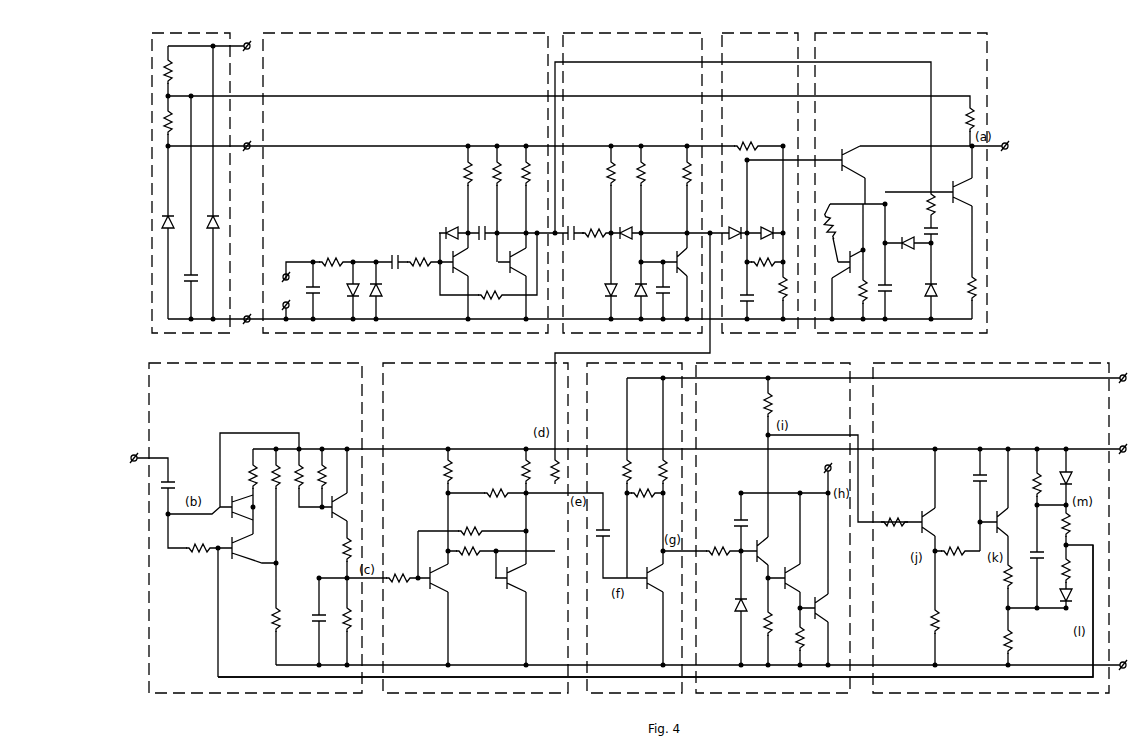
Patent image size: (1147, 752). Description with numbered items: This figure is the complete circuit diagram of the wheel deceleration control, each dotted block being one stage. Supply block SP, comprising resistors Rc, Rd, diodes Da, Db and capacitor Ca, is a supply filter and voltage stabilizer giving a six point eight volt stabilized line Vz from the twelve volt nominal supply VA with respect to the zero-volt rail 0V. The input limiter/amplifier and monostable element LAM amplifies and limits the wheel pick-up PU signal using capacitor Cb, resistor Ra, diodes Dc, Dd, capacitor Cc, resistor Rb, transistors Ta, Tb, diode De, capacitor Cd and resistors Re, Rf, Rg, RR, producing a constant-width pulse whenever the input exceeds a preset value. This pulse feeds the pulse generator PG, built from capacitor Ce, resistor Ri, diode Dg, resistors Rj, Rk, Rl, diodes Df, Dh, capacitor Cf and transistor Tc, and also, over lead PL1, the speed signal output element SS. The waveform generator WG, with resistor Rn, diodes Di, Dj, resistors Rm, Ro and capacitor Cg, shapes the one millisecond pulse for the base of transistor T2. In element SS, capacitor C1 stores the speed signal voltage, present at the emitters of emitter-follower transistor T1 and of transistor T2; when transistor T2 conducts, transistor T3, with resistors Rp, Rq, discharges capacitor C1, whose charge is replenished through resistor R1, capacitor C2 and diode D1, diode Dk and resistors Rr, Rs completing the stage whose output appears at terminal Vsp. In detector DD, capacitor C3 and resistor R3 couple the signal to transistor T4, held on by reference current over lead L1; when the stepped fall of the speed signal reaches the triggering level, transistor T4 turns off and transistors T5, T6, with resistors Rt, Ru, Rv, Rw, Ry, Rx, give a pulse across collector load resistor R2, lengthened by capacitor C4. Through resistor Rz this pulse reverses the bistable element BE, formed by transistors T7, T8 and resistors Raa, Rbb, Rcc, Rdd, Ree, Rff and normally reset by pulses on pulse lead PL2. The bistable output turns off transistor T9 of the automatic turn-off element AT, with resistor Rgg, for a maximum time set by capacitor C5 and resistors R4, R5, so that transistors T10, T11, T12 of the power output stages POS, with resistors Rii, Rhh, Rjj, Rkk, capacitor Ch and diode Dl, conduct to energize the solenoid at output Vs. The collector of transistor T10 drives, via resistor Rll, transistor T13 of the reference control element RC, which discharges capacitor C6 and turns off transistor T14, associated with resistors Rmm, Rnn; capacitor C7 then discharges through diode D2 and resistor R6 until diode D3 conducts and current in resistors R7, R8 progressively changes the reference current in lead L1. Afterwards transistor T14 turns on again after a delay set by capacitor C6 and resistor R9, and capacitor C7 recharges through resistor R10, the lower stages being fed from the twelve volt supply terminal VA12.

The supply block SP is at (222, 336).
The lamp amplifier block LAM is at (372, 336).
The pulse generator block PG is at (652, 336).
The wave generator block WG is at (790, 336).
The switching stage block SS is at (920, 336).
The detector block DD is at (302, 696).
The bistable element block BE is at (512, 696).
The trigger block AT is at (655, 696).
The position stage block POS is at (805, 696).
The relay control block RC is at (968, 696).
The resistor Rc is at (177, 70).
The resistor Rd is at (178, 121).
The zener diode Da is at (175, 229).
The zener diode Db is at (206, 229).
The capacitor Ca is at (198, 282).
The supply voltage terminal VA is at (243, 57).
The zener voltage terminal Vz is at (682, 285).
The ground terminal 0V is at (683, 492).
The pick-up terminals PU is at (282, 291).
The capacitor Cb is at (321, 287).
The resistor Ra is at (332, 254).
The diode Dc is at (346, 295).
The diode Dd is at (384, 295).
The capacitor Cc is at (395, 271).
The resistor Rb is at (420, 253).
The diode De is at (452, 223).
The capacitor Cd is at (482, 224).
The resistor Re is at (476, 179).
The resistor Rf is at (504, 179).
The resistor Rg is at (534, 179).
The transistor Ta is at (459, 262).
The transistor Tb is at (505, 262).
The resistor RR is at (491, 305).
The capacitor Ce is at (571, 224).
The resistor Ri is at (595, 223).
The diode Dg is at (626, 224).
The resistor Rj is at (617, 179).
The resistor Rk is at (648, 179).
The resistor Rl is at (680, 179).
The zener diode Df is at (617, 294).
The diode Dh is at (648, 294).
The capacitor Cf is at (668, 294).
The transistor Tc is at (676, 256).
The pilot line 1 PL1 is at (668, 62).
The pilot line 2 PL2 is at (553, 402).
The resistor Rn is at (747, 137).
The diode Di is at (735, 224).
The diode Dj is at (767, 224).
The resistor Rm is at (764, 253).
The resistor Ro is at (773, 287).
The capacitor Cg is at (754, 300).
The transistor T2 is at (845, 168).
The resistor Rp is at (837, 224).
The transistor T3 is at (847, 257).
The resistor Rq is at (852, 291).
The capacitor C1 is at (891, 291).
The diode D1 is at (907, 234).
The resistor R1 is at (920, 204).
The capacitor C2 is at (940, 231).
The diode Dk is at (938, 295).
The resistor Rr is at (961, 287).
The transistor T1 is at (954, 183).
The resistor Rs is at (959, 118).
The speed voltage terminal Vsp is at (564, 288).
The capacitor C3 is at (176, 483).
The transistor T5 is at (236, 496).
The transistor T4 is at (247, 542).
The resistor R3 is at (197, 539).
The resistor Rt is at (244, 475).
The resistor Ru is at (284, 482).
The resistor Rv is at (299, 458).
The resistor Rw is at (326, 458).
The transistor T6 is at (325, 512).
The resistor Ry is at (335, 548).
The resistor Rx is at (263, 624).
The capacitor C4 is at (310, 611).
The resistor R2 is at (338, 625).
The ground line L1 is at (218, 598).
The resistor Rz is at (399, 565).
The transistor T7 is at (433, 585).
The resistor Raa is at (427, 470).
The resistor Rbb is at (493, 484).
The resistor Ree is at (509, 468).
The resistor Rff is at (543, 475).
The resistor Rcc is at (471, 521).
The resistor Rdd is at (469, 562).
The transistor T8 is at (510, 585).
The capacitor C5 is at (609, 528).
The resistor R4 is at (614, 470).
The resistor Rgg is at (656, 462).
The resistor R5 is at (644, 502).
The transistor T9 is at (649, 585).
The resistor Rii is at (778, 403).
The signal voltage terminal Vs is at (824, 466).
The capacitor Ch is at (731, 518).
The resistor Rhh is at (717, 542).
The transistor T10 is at (769, 550).
The transistor T11 is at (795, 573).
The transistor T12 is at (822, 600).
The diode Dl is at (733, 606).
The resistor Rjj is at (758, 633).
The resistor Rkk is at (788, 641).
The resistor Rll is at (894, 511).
The transistor T13 is at (919, 528).
The resistor R9 is at (925, 625).
The resistor Rmm is at (955, 541).
The capacitor C6 is at (987, 474).
The transistor T14 is at (994, 528).
The resistor Rnn is at (993, 582).
The resistor R6 is at (1017, 640).
The capacitor C7 is at (1028, 548).
The resistor R10 is at (1049, 476).
The diode D2 is at (1075, 471).
The resistor R7 is at (1075, 523).
The resistor R8 is at (1075, 569).
The diode D3 is at (1075, 599).
The +12V supply terminal VA12 is at (1097, 366).